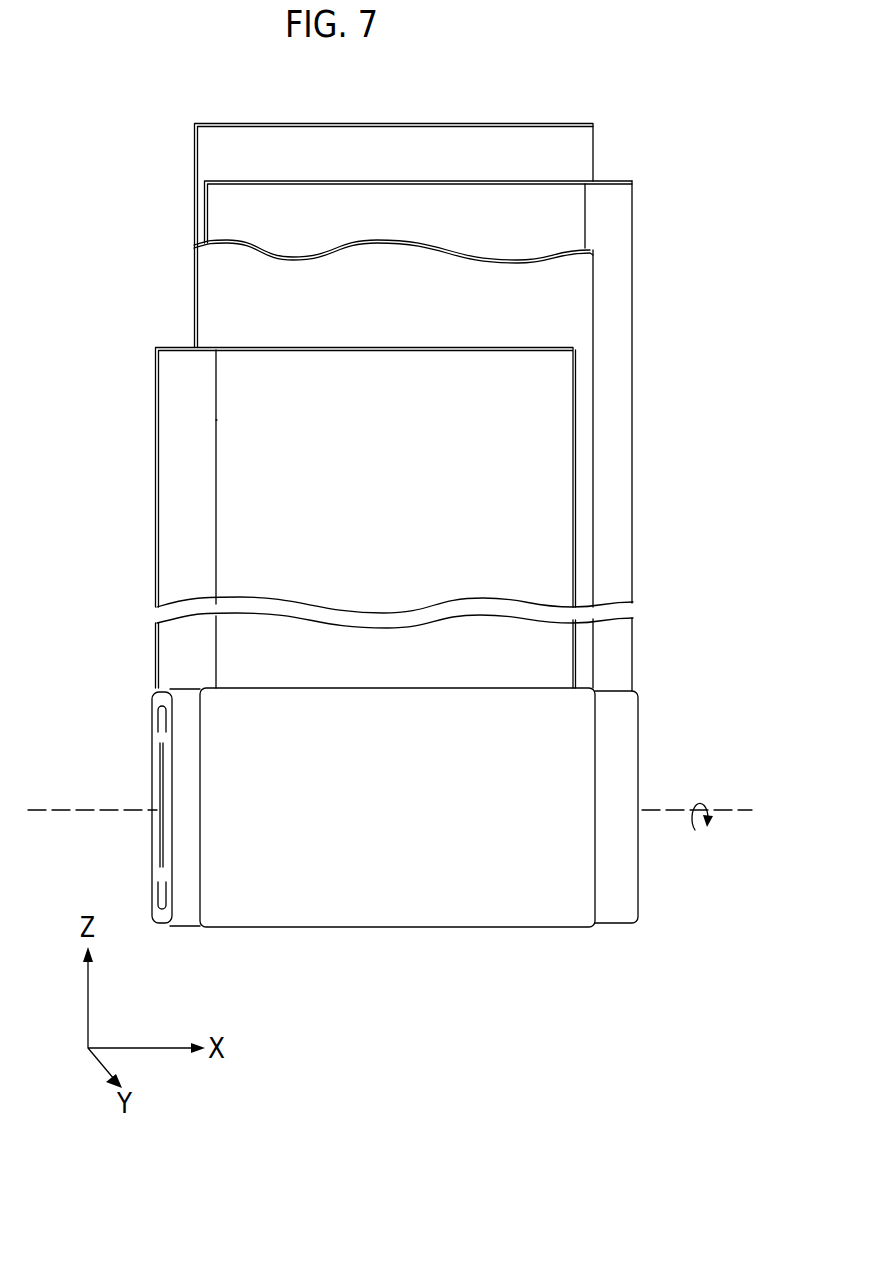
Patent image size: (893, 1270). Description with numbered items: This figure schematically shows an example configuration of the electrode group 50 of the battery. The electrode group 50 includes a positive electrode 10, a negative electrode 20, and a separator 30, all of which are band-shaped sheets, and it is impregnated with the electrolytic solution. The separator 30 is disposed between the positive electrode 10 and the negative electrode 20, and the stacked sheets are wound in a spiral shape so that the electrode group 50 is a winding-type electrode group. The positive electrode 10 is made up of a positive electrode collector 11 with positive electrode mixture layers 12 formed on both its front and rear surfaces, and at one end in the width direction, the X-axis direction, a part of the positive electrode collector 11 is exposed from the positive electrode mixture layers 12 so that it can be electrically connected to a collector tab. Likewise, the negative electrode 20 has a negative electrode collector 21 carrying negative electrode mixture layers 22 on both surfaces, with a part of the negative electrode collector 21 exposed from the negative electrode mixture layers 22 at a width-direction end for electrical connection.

The positive electrode 10 is at (327, 518).
The positive electrode collector 11 is at (203, 486).
The positive electrode mixture layers 12 is at (255, 542).
The negative electrode 20 is at (496, 436).
The negative electrode collector 21 is at (602, 288).
The negative electrode mixture layers 22 is at (543, 206).
The separator 30 is at (590, 135).
The electrode group 50 is at (507, 820).